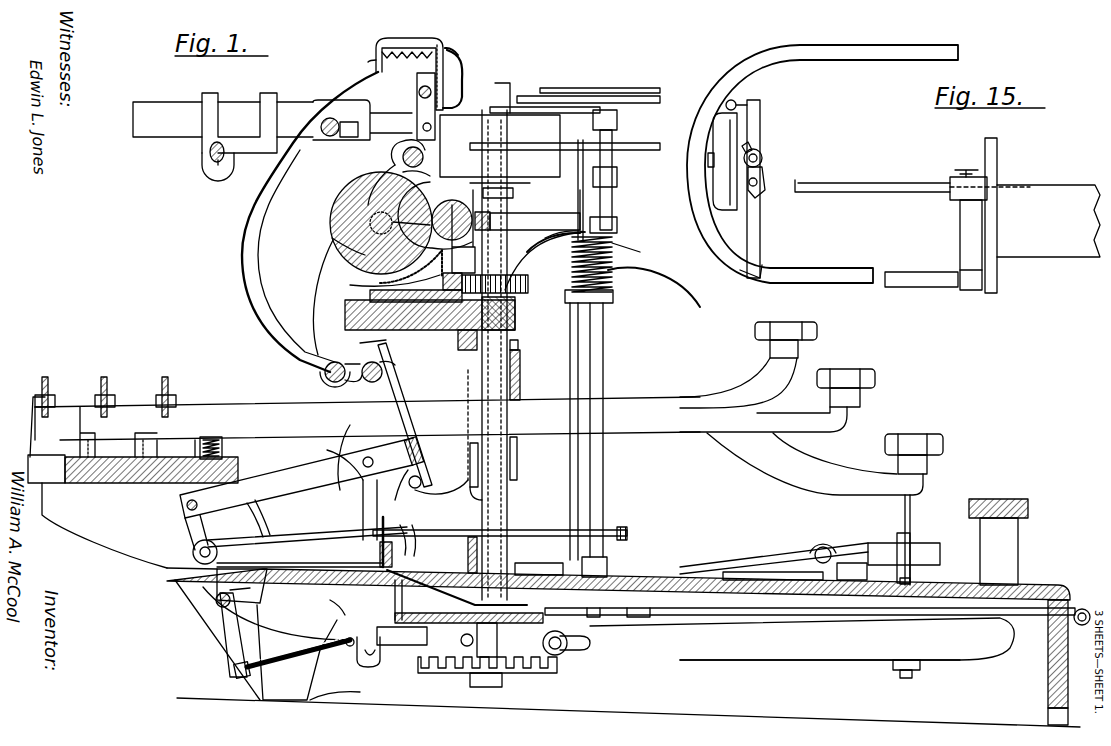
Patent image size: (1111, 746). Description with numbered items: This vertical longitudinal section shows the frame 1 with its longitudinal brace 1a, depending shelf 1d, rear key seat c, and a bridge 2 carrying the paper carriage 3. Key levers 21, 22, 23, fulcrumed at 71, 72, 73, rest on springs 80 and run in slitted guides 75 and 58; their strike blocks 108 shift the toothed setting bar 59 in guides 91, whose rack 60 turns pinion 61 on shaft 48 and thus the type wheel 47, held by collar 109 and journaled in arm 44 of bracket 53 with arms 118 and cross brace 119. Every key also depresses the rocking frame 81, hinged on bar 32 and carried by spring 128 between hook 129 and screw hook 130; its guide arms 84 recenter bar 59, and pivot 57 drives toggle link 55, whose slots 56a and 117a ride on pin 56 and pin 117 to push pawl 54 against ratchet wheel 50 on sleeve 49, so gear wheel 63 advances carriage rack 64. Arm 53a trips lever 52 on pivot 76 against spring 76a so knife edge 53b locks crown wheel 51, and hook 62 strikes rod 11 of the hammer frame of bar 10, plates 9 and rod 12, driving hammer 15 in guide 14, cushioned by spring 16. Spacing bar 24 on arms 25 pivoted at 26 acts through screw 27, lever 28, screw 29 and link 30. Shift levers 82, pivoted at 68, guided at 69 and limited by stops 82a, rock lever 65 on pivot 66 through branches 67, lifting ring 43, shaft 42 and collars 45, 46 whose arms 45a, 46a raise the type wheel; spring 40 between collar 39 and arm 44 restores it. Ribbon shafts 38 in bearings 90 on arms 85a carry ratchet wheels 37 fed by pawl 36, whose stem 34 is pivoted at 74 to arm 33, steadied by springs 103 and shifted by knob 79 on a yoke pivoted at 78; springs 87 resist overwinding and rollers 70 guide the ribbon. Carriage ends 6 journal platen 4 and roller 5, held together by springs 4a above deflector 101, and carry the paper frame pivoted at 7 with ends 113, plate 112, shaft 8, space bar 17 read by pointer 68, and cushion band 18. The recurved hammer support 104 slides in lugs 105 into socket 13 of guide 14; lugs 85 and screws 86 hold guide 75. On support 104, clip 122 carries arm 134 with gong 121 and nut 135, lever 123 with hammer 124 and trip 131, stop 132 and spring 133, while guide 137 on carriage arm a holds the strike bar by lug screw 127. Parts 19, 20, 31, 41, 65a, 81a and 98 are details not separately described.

In FIG. 1, the frame 1 is at (561, 605).
In FIG. 1, the base plate 1a is at (660, 575).
In FIG. 1, the rack 1d is at (535, 675).
In FIG. 1, the carriage 2 is at (352, 333).
In FIG. 15, the carriage 2 is at (960, 245).
In FIG. 1, the carriage bar 3 is at (432, 330).
In FIG. 1, the type wheel 4 is at (331, 201).
In FIG. 1, the type wheel guard 4a is at (410, 188).
In FIG. 1, the pinion 5 is at (472, 212).
In FIG. 1, the plate 6 is at (330, 238).
In FIG. 15, the plate 6 is at (997, 167).
In FIG. 1, the roller 7 is at (402, 156).
In FIG. 1, the pivot 8 is at (418, 90).
In FIG. 1, the housing 9 is at (242, 255).
In FIG. 1, the pivot pin 10 is at (324, 373).
In FIG. 1, the pivot pin 11 is at (370, 382).
In FIG. 1, the pin 12 is at (329, 137).
In FIG. 1, the pin 13 is at (209, 153).
In FIG. 1, the carriage bar 14 is at (278, 102).
In FIG. 1, the block 15 is at (351, 120).
In FIG. 1, the block 16 is at (351, 138).
In FIG. 1, the spring 17 is at (464, 62).
In FIG. 1, the post 18 is at (415, 112).
In FIG. 1, the bar 19 is at (575, 93).
In FIG. 1, the bar 20 is at (648, 150).
In FIG. 1, the key 21 is at (748, 356).
In FIG. 1, the key 22 is at (777, 392).
In FIG. 1, the key 23 is at (825, 457).
In FIG. 1, the key 24 is at (998, 534).
In FIG. 1, the frame bar 25 is at (820, 649).
In FIG. 1, the rod 26 is at (730, 618).
In FIG. 1, the bolt 27 is at (565, 652).
In FIG. 1, the block 28 is at (400, 646).
In FIG. 1, the link 29 is at (350, 648).
In FIG. 1, the lever 30 is at (341, 460).
In FIG. 1, the pin 31 is at (376, 462).
In FIG. 1, the pin 32 is at (198, 502).
In FIG. 1, the link 33 is at (186, 532).
In FIG. 1, the lever 34 is at (307, 531).
In FIG. 1, the bar 36 is at (510, 530).
In FIG. 1, the nut 37 is at (627, 530).
In FIG. 1, the rod 38 is at (570, 338).
In FIG. 1, the collar 39 is at (613, 297).
In FIG. 1, the spring end 40 is at (628, 246).
In FIG. 1, the rod 41 is at (612, 136).
In FIG. 1, the rod 42 is at (603, 362).
In FIG. 1, the block 43 is at (607, 560).
In FIG. 1, the collar 44 is at (617, 224).
In FIG. 1, the collar 45 is at (617, 178).
In FIG. 1, the rod 45a is at (606, 200).
In FIG. 1, the collar 46 is at (617, 120).
In FIG. 1, the bar 46a is at (575, 96).
In FIG. 1, the type plate 47 is at (464, 118).
In FIG. 1, the shaft 48 is at (508, 214).
In FIG. 1, the plate 49 is at (515, 416).
In FIG. 1, the block 50 is at (539, 562).
In FIG. 1, the rod 51 is at (487, 640).
In FIG. 1, the spring 52 is at (276, 613).
In FIG. 1, the bar 53 is at (515, 315).
In FIG. 1, the arm 53a is at (266, 510).
In FIG. 1, the arm 53b is at (412, 650).
In FIG. 1, the bar 54 is at (305, 565).
In FIG. 1, the block 55 is at (395, 542).
In FIG. 1, the link 56 is at (418, 533).
In FIG. 1, the link 56a is at (353, 450).
In FIG. 1, the pin 57 is at (420, 478).
In FIG. 1, the lever 58 is at (405, 393).
In FIG. 1, the bar 59 is at (508, 456).
In FIG. 1, the lever 60 is at (458, 596).
In FIG. 1, the bar 61 is at (475, 605).
In FIG. 1, the hook 62 is at (382, 350).
In FIG. 1, the rack 63 is at (528, 282).
In FIG. 1, the block 64 is at (443, 282).
In FIG. 1, the lever 65 is at (742, 558).
In FIG. 1, the block 65a is at (478, 687).
In FIG. 1, the pivot 66 is at (828, 548).
In FIG. 1, the block 67 is at (935, 548).
In FIG. 1, the block 68 is at (452, 48).
In FIG. 1, the bolt 69 is at (915, 676).
In FIG. 1, the axis 70 is at (370, 222).
In FIG. 1, the screw 71 is at (166, 387).
In FIG. 1, the screw 72 is at (105, 387).
In FIG. 1, the screw 73 is at (45, 387).
In FIG. 1, the pivot 74 is at (208, 550).
In FIG. 1, the bar 75 is at (520, 376).
In FIG. 1, the lever 76 is at (238, 615).
In FIG. 1, the block 76a is at (275, 604).
In FIG. 1, the bracket 78 is at (618, 620).
In FIG. 1, the leg 79 is at (1048, 636).
In FIG. 1, the spring 80 is at (222, 442).
In FIG. 1, the lever 81 is at (296, 478).
In FIG. 1, the lever 81a is at (222, 628).
In FIG. 1, the rod 82 is at (911, 505).
In FIG. 1, the nut 82a is at (912, 581).
In FIG. 1, the bar 84 is at (518, 476).
In FIG. 1, the block 85 is at (518, 344).
In FIG. 1, the arm 85a is at (545, 261).
In FIG. 1, the spring 86 is at (600, 305).
In FIG. 1, the collar 87 is at (572, 296).
In FIG. 1, the arm 90 is at (567, 229).
In FIG. 1, the link 91 is at (500, 500).
In FIG. 1, the arm 98 is at (686, 290).
In FIG. 1, the guide 101 is at (345, 283).
In FIG. 1, the rod 103 is at (363, 515).
In FIG. 1, the bar 104 is at (216, 162).
In FIG. 15, the bar 104 is at (843, 60).
In FIG. 1, the block 105 is at (458, 348).
In FIG. 1, the rod 108 is at (463, 422).
In FIG. 1, the block 109 is at (513, 195).
In FIG. 1, the paper 112 is at (395, 38).
In FIG. 15, the paper 112 is at (1048, 221).
In FIG. 1, the guide 113 is at (376, 60).
In FIG. 1, the link 117 is at (441, 480).
In FIG. 1, the block 117a is at (489, 555).
In FIG. 1, the bar 118 is at (320, 316).
In FIG. 1, the bracket 119 is at (465, 231).
In FIG. 15, the plate 121 is at (726, 161).
In FIG. 15, the bar 122 is at (760, 232).
In FIG. 15, the bar 123 is at (760, 128).
In FIG. 15, the knob 124 is at (740, 100).
In FIG. 15, the screw 127 is at (961, 165).
In FIG. 1, the spring 128 is at (290, 658).
In FIG. 15, the spring 128 is at (912, 195).
In FIG. 1, the link 129 is at (343, 605).
In FIG. 1, the block 130 is at (243, 678).
In FIG. 15, the pawl 131 is at (762, 193).
In FIG. 15, the pin 132 is at (755, 146).
In FIG. 15, the roller 133 is at (763, 157).
In FIG. 15, the lever 134 is at (740, 165).
In FIG. 15, the stop 135 is at (708, 155).
In FIG. 15, the block 137 is at (952, 198).
In FIG. 1, the arm a is at (303, 298).
In FIG. 1, the support c is at (27, 466).